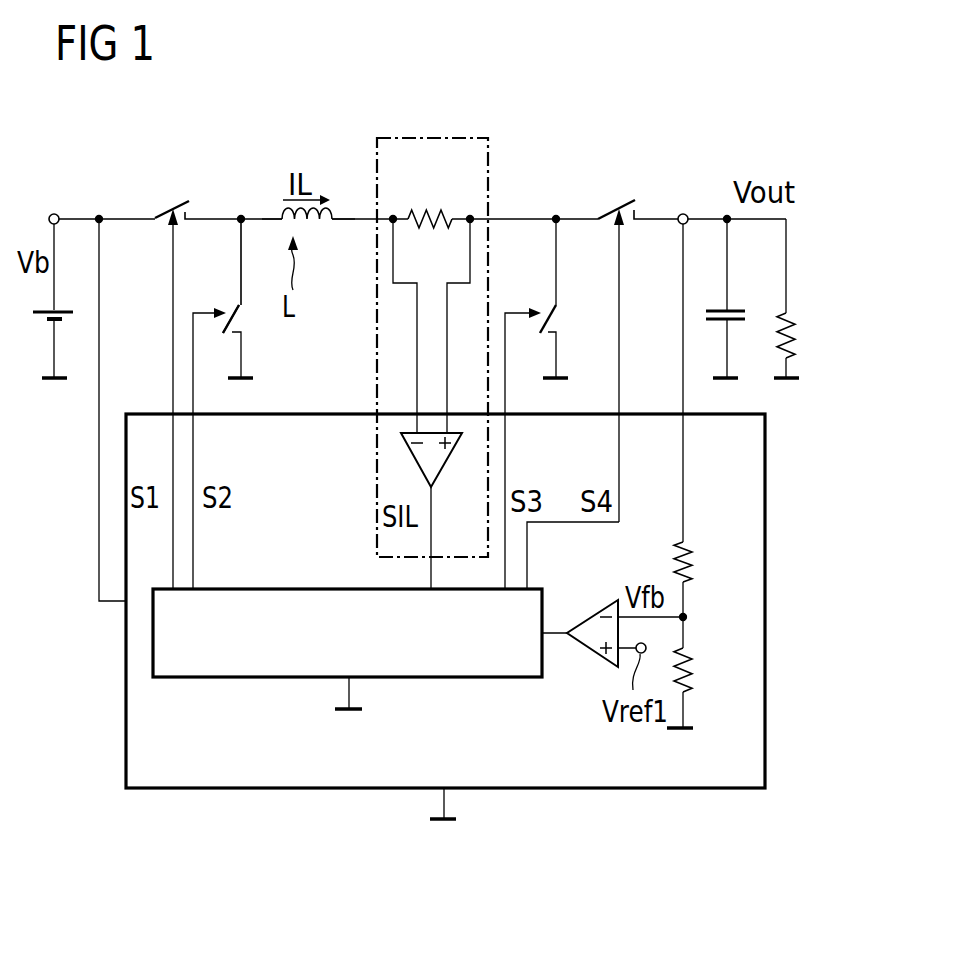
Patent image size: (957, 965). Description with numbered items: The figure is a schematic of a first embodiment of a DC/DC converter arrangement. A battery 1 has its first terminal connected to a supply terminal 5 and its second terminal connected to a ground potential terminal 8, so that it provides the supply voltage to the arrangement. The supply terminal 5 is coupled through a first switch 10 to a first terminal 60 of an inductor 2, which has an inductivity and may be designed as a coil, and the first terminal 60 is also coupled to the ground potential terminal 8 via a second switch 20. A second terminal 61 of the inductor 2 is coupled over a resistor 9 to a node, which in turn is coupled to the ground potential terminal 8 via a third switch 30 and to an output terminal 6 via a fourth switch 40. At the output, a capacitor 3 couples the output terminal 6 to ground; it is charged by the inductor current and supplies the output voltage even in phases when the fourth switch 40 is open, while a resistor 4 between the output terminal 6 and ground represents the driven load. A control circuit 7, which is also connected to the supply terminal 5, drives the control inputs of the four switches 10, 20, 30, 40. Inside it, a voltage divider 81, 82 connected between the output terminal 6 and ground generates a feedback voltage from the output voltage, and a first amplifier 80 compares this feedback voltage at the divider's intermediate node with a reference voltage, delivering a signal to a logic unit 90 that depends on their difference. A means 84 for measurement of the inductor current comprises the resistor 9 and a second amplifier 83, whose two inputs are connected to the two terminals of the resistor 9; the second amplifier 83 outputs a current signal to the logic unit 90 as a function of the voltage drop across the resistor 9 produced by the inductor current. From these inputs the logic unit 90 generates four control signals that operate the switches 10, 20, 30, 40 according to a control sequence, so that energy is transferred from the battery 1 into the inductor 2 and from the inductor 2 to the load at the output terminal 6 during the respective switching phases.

The battery 1 is at (62, 310).
The inductor 2 is at (308, 226).
The capacitor 3 is at (722, 309).
The resistor 4 is at (797, 317).
The supply terminal 5 is at (54, 212).
The output terminal 6 is at (684, 212).
The control circuit 7 is at (767, 600).
The ground potential terminal 8 is at (62, 375).
The resistor 9 is at (436, 206).
The first switch 10 is at (171, 200).
The second switch 20 is at (228, 308).
The third switch 30 is at (549, 308).
The fourth switch 40 is at (616, 200).
The first terminal of the inductor 60 is at (280, 213).
The second terminal of the inductor 61 is at (333, 213).
The first amplifier 80 is at (592, 616).
The voltage divider resistor 81 is at (695, 578).
The voltage divider resistor 82 is at (695, 660).
The second amplifier 83 is at (446, 458).
The means for measurement of inductor current 84 is at (448, 136).
The logic unit 90 is at (444, 680).